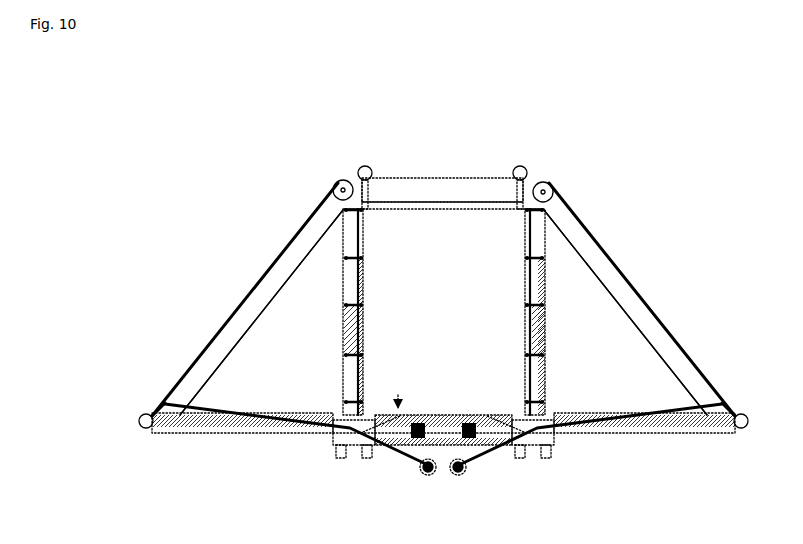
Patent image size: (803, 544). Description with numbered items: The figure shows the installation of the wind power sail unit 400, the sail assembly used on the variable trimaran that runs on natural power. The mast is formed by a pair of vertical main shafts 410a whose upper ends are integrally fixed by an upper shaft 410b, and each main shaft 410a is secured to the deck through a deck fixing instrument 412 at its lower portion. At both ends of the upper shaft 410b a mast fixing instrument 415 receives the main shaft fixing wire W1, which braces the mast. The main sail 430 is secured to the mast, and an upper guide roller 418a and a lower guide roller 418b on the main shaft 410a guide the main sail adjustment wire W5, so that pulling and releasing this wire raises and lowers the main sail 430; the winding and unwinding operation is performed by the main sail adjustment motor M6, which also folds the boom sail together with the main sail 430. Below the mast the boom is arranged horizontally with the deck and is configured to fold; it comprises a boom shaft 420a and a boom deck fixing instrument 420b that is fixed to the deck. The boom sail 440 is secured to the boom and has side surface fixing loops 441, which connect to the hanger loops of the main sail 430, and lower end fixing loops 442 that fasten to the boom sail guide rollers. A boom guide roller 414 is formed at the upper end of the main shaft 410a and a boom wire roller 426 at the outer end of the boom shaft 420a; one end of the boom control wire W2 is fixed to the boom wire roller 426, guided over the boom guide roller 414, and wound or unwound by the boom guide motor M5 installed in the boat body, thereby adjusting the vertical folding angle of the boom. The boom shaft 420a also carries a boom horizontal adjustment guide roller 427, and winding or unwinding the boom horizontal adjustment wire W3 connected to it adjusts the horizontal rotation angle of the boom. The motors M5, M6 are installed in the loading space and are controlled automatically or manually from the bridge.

The wind power sail unit 400 is at (200, 76).
The main shaft 410a is at (335, 345).
The upper shaft 410b is at (424, 160).
The deck fixing instrument 412 is at (365, 458).
The boom guide roller 414 is at (337, 180).
The mast fixing instrument 415 is at (366, 165).
The upper guide roller 418a is at (506, 176).
The lower guide roller 418b is at (505, 447).
The boom shaft 420a is at (201, 442).
The boom deck fixing instrument 420b is at (340, 460).
The boom wire roller 426 is at (142, 413).
The boom horizontal adjustment guide roller 427 is at (157, 397).
The main sail 430 is at (400, 447).
The boom sail 440 is at (208, 336).
The side surface fixing loops 441 is at (292, 267).
The lower end fixing loops 442 is at (248, 430).
The main shaft fixing wire W1 is at (333, 230).
The boom control wire W2 is at (230, 360).
The boom horizontal adjustment wire W3 is at (318, 435).
The main sail adjustment wire W5 is at (556, 230).
The boom guide motor M5 is at (457, 477).
The main sail adjustment motor M6 is at (430, 477).